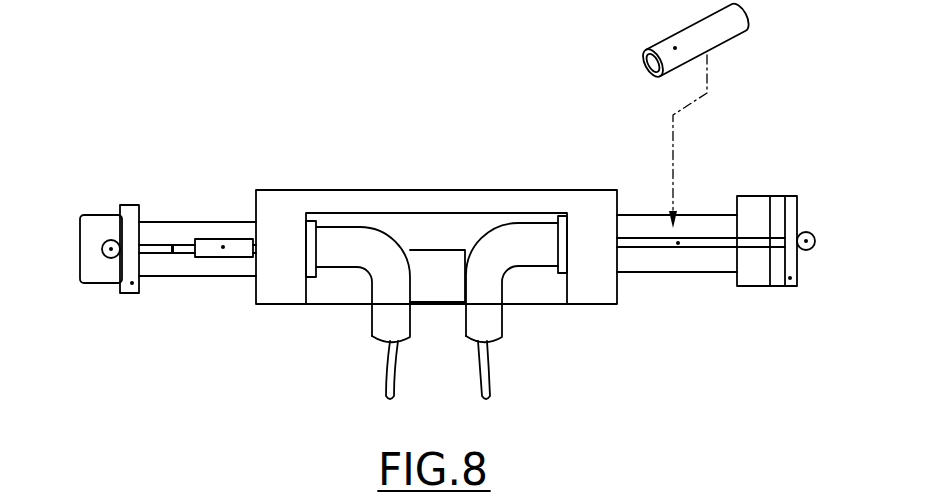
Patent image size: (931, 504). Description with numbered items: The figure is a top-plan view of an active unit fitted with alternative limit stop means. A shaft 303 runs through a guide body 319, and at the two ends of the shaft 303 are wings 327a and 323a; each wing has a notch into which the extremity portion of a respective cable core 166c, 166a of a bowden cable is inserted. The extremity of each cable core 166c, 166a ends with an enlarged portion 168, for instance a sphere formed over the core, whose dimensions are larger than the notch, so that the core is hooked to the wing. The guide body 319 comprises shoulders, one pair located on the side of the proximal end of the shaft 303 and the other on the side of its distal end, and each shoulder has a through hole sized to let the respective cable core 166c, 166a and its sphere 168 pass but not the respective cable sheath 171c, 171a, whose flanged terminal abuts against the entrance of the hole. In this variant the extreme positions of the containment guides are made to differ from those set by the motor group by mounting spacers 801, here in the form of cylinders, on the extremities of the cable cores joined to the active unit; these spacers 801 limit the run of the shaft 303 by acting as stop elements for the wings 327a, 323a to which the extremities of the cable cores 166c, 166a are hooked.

The enlarged portion 168 is at (111, 249).
The shaft 303 is at (178, 221).
The spacer 801 is at (223, 246).
The cable sheath 171c is at (360, 227).
The guide body 319 is at (428, 182).
The cable sheath 171a is at (495, 230).
The wing 327a is at (132, 283).
The cable core 166c is at (388, 372).
The cable core 166a is at (678, 243).
The wing 323a is at (790, 279).